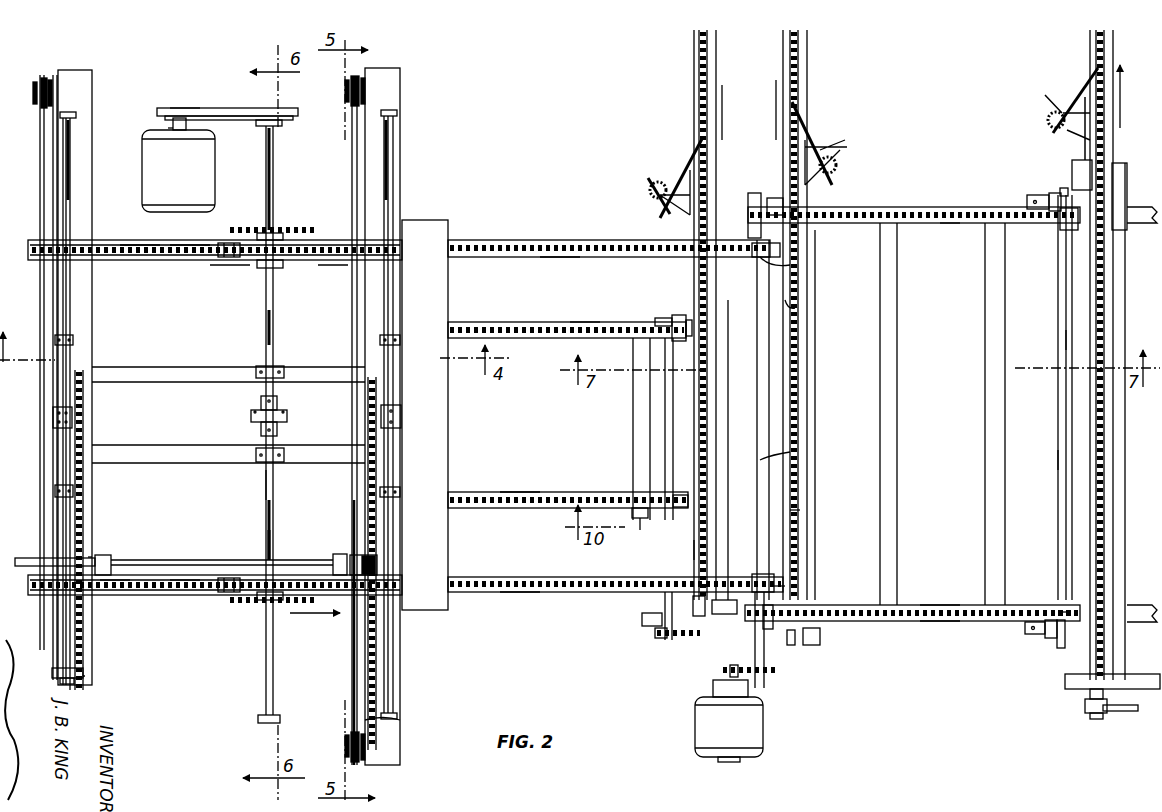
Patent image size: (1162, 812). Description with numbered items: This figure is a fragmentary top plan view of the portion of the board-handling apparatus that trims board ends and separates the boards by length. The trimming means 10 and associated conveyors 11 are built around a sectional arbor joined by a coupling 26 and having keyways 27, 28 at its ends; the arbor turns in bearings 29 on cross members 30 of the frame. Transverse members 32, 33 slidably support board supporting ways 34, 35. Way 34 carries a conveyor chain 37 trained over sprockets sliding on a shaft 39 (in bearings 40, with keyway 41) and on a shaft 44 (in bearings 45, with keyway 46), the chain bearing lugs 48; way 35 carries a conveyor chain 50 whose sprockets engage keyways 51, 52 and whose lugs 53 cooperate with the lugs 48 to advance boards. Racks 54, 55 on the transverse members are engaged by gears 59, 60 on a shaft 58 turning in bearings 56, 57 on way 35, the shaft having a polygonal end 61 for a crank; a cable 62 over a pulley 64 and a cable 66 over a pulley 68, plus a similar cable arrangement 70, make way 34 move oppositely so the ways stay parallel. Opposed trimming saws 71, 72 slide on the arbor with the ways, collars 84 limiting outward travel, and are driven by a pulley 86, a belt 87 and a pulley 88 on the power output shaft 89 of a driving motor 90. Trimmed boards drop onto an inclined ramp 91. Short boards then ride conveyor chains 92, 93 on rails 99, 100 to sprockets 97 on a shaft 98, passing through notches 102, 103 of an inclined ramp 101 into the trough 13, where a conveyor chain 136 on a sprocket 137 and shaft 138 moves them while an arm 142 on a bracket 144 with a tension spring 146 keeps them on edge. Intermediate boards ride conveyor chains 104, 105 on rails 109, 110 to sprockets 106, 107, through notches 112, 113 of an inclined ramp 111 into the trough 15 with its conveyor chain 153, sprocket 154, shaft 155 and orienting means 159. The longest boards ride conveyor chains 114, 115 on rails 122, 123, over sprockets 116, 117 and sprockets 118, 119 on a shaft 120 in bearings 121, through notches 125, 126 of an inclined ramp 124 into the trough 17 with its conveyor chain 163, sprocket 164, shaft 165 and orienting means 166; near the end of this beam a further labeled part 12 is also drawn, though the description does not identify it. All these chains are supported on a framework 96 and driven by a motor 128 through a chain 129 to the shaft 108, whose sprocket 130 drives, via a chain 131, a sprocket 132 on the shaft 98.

The trimming means 10 is at (265, 478).
The conveyors 11 is at (148, 262).
The bearing block 12 is at (1037, 196).
The laterally extending conveyor trough 13 is at (715, 422).
The laterally extending conveyor trough 15 is at (808, 420).
The laterally extending conveyor trough 17 is at (1105, 476).
The coupling 26 is at (262, 400).
The elongated keyway 27 is at (273, 300).
The keyway 28 is at (266, 540).
The bearings 29 is at (283, 366).
The cross members 30 is at (180, 380).
The transverse member 32 is at (92, 300).
The transverse member 33 is at (400, 156).
The board supporting way 34 is at (168, 262).
The board supporting way 35 is at (182, 596).
The conveyor chain 37 is at (140, 232).
The shaft 39 is at (70, 195).
The bearings 40 is at (73, 338).
The elongated keyway 41 is at (66, 180).
The shaft 44 is at (393, 190).
The bearings 45 is at (400, 340).
The elongated keyway 46 is at (393, 206).
The lugs 48 is at (190, 232).
The conveyor chain 50 is at (115, 596).
The elongated keyway 51 is at (85, 678).
The elongated keyway 52 is at (393, 665).
The lugs 53 is at (215, 596).
The rack 54 is at (83, 668).
The rack 55 is at (395, 730).
The bearing 56 is at (111, 560).
The bearing 57 is at (338, 556).
The shaft 58 is at (222, 560).
The gear 59 is at (92, 556).
The gear 60 is at (377, 566).
The polygonal end 61 is at (25, 558).
The cable 62 is at (352, 160).
The pulley 64 is at (345, 100).
The cable 66 is at (352, 658).
The pulley 68 is at (345, 738).
The cable arrangement 70 is at (40, 290).
The trimming saw 71 is at (305, 228).
The trimming saw 72 is at (262, 604).
The collars 84 is at (76, 115).
The pulley 86 is at (258, 124).
The belt 87 is at (218, 108).
The pulley 88 is at (178, 108).
The power output shaft 89 is at (172, 128).
The driving motor 90 is at (178, 165).
The inclined ramp 91 is at (430, 611).
The conveyor chain 92 is at (545, 330).
The conveyor chain 93 is at (560, 500).
The framework 96 is at (635, 475).
The sprockets 97 is at (655, 320).
The shaft 98 is at (670, 455).
The rail 99 is at (578, 322).
The rail 100 is at (535, 497).
The inclined ramp 101 is at (650, 400).
The notch 102 is at (676, 315).
The notch 103 is at (648, 516).
The conveyor chain 104 is at (545, 245).
The conveyor chain 105 is at (518, 592).
The sprocket 106 is at (790, 265).
The sprocket 107 is at (774, 578).
The shaft 108 is at (790, 452).
The rail 109 is at (566, 257).
The rail 110 is at (518, 580).
The inclined ramp 111 is at (795, 308).
The notch 112 is at (780, 250).
The notch 113 is at (785, 587).
The conveyor chain 114 is at (940, 215).
The conveyor chain 115 is at (936, 621).
The sprocket 116 is at (752, 220).
The sprocket 117 is at (770, 628).
The sprocket 118 is at (1060, 226).
The sprocket 119 is at (1062, 612).
The shaft 120 is at (1062, 456).
The bearings 121 is at (1037, 634).
The rail 122 is at (947, 223).
The rail 123 is at (946, 606).
The inclined ramp 124 is at (1068, 338).
The notch 125 is at (1075, 200).
The notch 126 is at (1075, 607).
The motor 128 is at (729, 721).
The chain 129 is at (752, 674).
The sprocket 130 is at (755, 646).
The chain 131 is at (676, 636).
The sprocket 132 is at (658, 638).
The conveyor chain 136 is at (697, 550).
The sprocket 137 is at (658, 608).
The shaft 138 is at (718, 612).
The arm 142 is at (679, 172).
The bracket 144 is at (690, 215).
The tension spring 146 is at (670, 200).
The conveyor chain 153 is at (800, 510).
The sprocket 154 is at (795, 642).
The shaft 155 is at (820, 640).
The orienting means 159 is at (812, 140).
The conveyor chain 163 is at (1082, 162).
The sprocket 164 is at (1096, 720).
The shaft 165 is at (1118, 712).
The orienting means 166 is at (1075, 96).